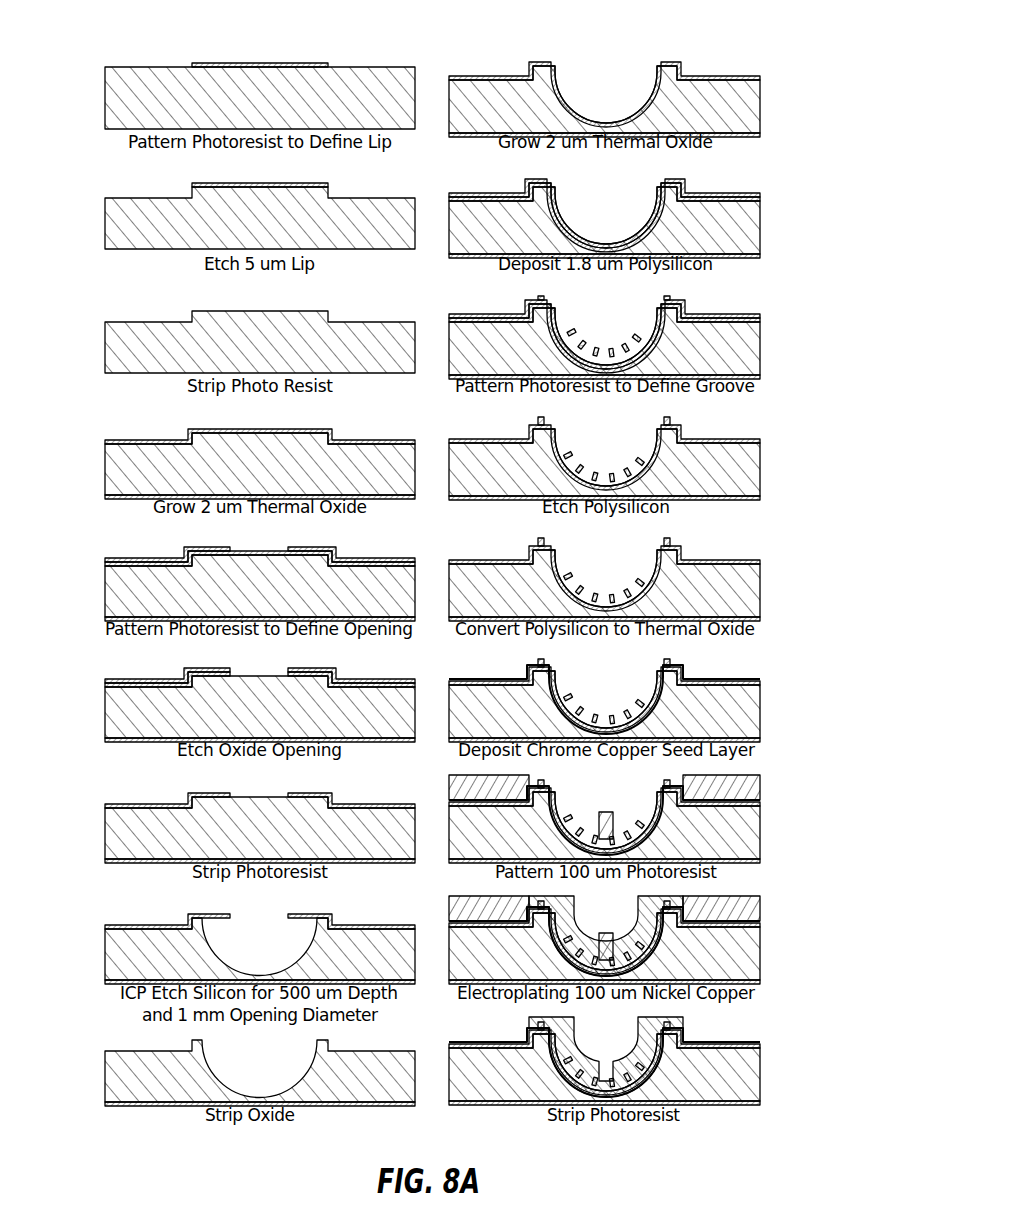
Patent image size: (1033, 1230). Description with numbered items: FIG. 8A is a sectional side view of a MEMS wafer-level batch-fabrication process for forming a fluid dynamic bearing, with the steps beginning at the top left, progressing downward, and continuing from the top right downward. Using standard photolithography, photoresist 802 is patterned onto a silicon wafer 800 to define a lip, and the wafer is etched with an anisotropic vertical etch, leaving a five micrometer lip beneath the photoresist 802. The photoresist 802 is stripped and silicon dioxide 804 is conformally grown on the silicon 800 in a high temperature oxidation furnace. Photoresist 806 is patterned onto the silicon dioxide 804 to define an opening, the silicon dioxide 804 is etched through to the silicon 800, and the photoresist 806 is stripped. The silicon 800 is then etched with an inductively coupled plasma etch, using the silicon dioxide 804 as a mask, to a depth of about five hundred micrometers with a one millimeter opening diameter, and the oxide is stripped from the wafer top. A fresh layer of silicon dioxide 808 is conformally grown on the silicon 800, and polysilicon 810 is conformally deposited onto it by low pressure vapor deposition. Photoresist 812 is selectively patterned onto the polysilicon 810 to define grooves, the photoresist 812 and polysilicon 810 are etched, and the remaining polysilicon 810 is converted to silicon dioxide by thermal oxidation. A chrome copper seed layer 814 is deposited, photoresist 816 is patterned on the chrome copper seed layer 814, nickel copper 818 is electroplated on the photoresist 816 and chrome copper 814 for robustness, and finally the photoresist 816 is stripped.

The silicon wafer 800 is at (432, 584).
The photoresist 802 is at (241, 112).
The silicon dioxide 804 is at (432, 618).
The photoresist 806 is at (225, 609).
The silicon dioxide 808 is at (639, 574).
The polysilicon 810 is at (639, 300).
The photoresist 812 is at (640, 319).
The chrome copper seed layer 814 is at (639, 876).
The photoresist 816 is at (639, 863).
The nickel copper 818 is at (679, 986).